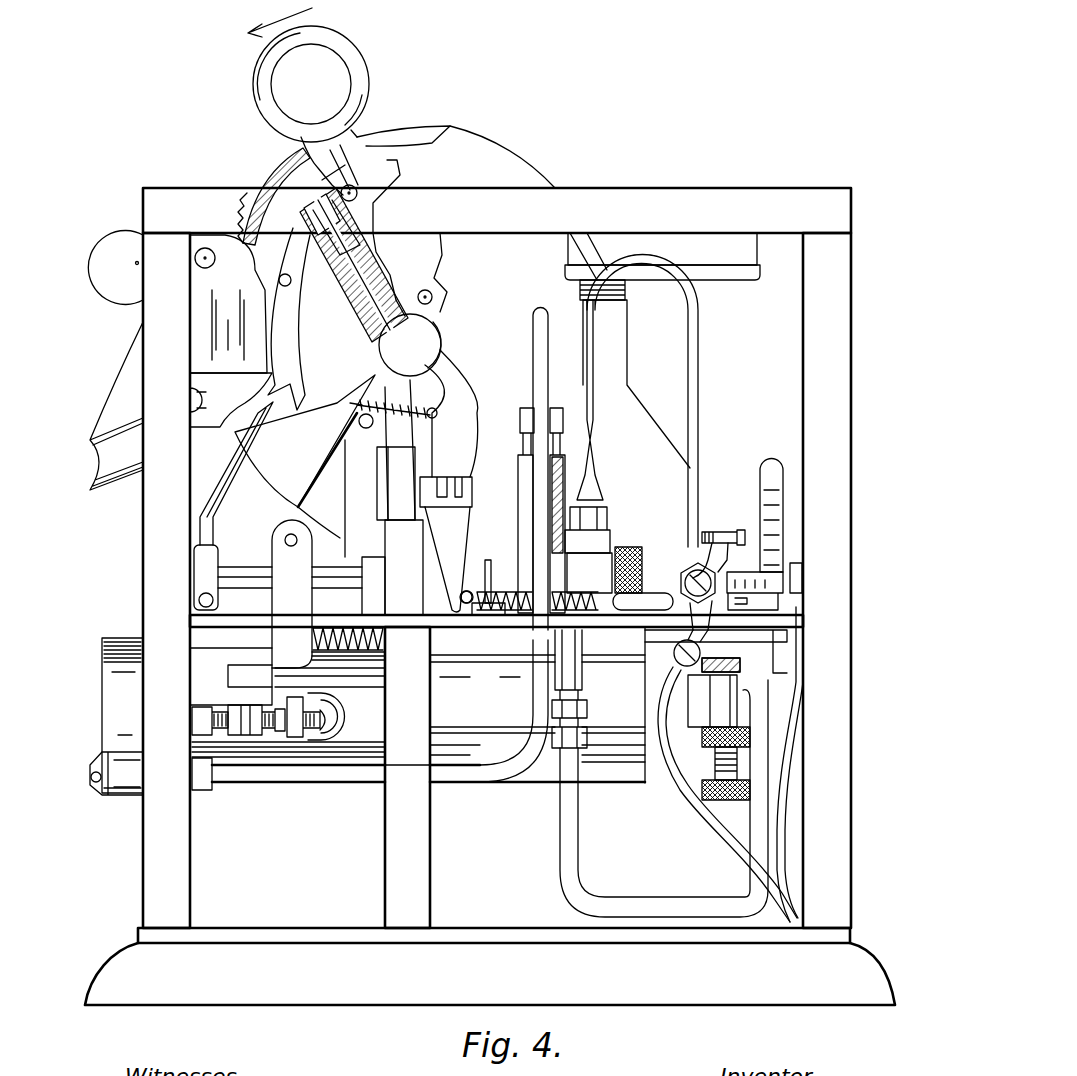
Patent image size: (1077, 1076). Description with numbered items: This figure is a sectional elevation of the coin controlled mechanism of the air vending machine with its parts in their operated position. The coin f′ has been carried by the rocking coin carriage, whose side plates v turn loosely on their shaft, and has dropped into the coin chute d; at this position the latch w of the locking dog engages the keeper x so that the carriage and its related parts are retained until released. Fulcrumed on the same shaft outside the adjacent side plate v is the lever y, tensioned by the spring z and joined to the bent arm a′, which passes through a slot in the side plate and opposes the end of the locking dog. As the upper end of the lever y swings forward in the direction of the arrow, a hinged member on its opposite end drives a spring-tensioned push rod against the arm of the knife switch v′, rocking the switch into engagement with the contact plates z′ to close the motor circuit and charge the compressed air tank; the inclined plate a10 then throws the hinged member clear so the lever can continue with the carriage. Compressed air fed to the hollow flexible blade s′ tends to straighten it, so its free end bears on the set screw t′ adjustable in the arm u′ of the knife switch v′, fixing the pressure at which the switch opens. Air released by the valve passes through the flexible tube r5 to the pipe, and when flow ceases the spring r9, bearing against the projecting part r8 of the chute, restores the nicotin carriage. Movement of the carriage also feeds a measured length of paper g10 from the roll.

The lever y is at (356, 78).
The bent arm a′ is at (352, 190).
The coin chute d is at (347, 310).
The coin f′ is at (280, 210).
The latch w is at (265, 385).
The paper g10 is at (115, 387).
The keeper x is at (231, 400).
The spring z is at (393, 380).
The side plates v is at (305, 456).
The flexible blade s′ is at (698, 385).
The set screw t′ is at (705, 545).
The contact plates z′ is at (770, 483).
The arm u′ is at (727, 555).
The knife switch v′ is at (773, 570).
The inclined plate a10 is at (485, 612).
The flexible tube r5 is at (95, 797).
The projecting part r8 is at (407, 777).
The spring r9 is at (347, 650).